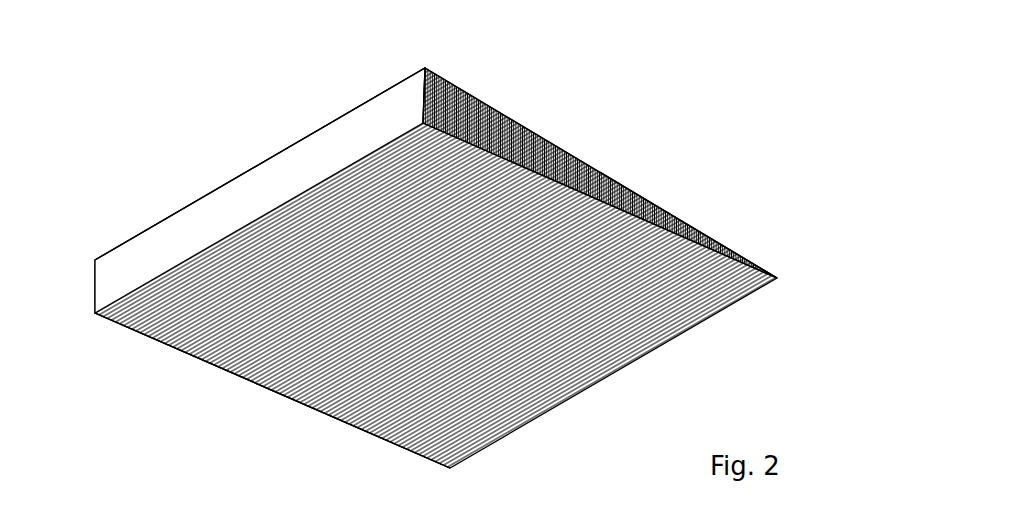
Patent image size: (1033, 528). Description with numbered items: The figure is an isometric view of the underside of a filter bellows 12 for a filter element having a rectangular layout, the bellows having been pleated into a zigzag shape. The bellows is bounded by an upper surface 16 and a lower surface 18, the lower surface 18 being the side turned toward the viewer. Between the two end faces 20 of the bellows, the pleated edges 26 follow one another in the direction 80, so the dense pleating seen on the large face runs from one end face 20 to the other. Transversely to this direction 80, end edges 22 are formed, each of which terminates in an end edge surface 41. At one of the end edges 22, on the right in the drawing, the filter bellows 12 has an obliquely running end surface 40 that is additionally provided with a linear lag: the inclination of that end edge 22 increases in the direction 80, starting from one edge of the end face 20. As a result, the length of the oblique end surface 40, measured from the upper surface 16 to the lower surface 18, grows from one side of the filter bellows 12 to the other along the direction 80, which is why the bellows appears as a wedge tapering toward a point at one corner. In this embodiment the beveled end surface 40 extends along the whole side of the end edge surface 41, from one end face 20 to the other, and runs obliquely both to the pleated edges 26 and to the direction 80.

The filter bellows 12 is at (433, 73).
The upper surface 16 is at (318, 125).
The lower surface 18 is at (252, 340).
The end face 20 is at (232, 200).
The end edge 22 is at (548, 148).
The pleated edge 26 is at (497, 108).
The oblique end surface 40 is at (650, 203).
The end edge surface 41 is at (268, 400).
The direction 80 is at (440, 323).